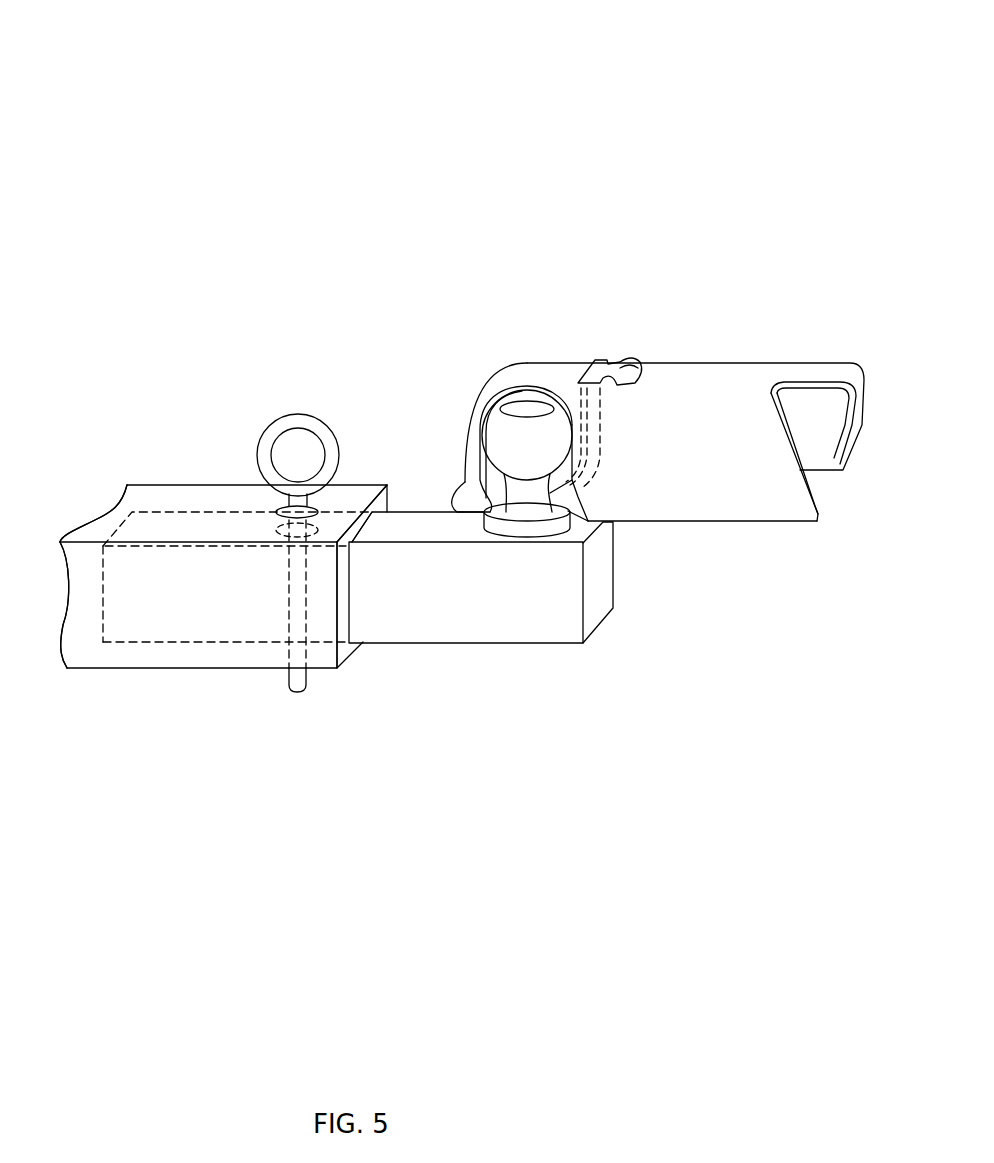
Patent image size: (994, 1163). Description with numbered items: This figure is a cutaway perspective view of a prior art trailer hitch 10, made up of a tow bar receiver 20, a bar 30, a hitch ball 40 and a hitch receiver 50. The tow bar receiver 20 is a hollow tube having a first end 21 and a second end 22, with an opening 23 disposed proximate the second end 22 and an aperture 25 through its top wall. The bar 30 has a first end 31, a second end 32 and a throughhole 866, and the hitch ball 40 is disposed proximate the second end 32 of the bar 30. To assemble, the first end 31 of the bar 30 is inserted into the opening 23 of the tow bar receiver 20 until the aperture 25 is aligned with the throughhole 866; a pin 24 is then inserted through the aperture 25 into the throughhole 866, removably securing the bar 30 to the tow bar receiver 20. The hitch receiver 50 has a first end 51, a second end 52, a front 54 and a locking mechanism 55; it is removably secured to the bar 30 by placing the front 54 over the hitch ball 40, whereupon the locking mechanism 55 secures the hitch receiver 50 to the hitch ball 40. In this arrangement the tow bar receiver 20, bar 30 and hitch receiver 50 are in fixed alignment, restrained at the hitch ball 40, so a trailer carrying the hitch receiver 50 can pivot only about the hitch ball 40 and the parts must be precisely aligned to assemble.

The trailer hitch 10 is at (359, 120).
The tow bar receiver 20 is at (180, 523).
The first end 21 is at (107, 530).
The second end 22 is at (322, 605).
The opening 23 is at (372, 525).
The pin 24 is at (300, 413).
The aperture 25 is at (270, 510).
The throughhole 866 is at (277, 528).
The bar 30 is at (473, 613).
The first end 31 is at (162, 605).
The second end 32 is at (555, 613).
The hitch ball 40 is at (533, 447).
The hitch receiver 50 is at (712, 467).
The first end 51 is at (562, 377).
The second end 52 is at (750, 377).
The front 54 is at (468, 496).
The locking mechanism 55 is at (627, 368).